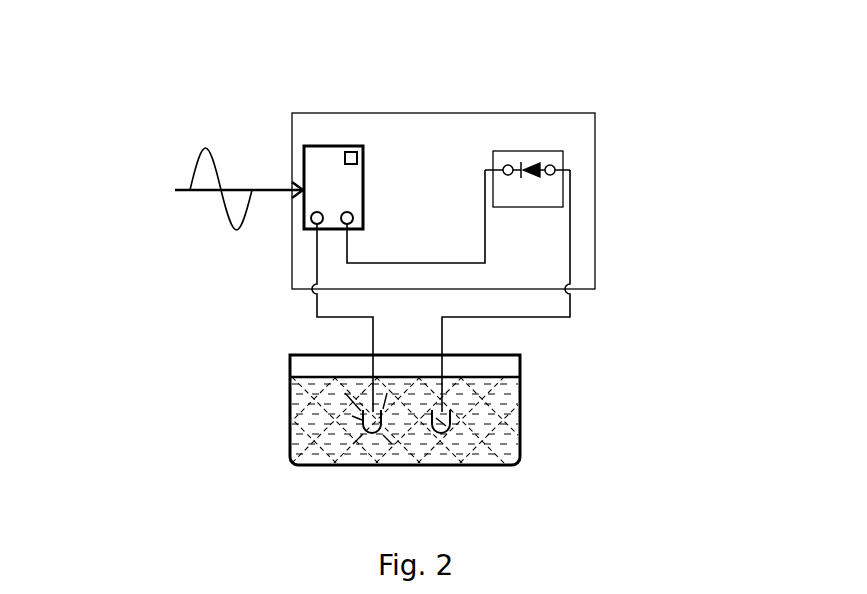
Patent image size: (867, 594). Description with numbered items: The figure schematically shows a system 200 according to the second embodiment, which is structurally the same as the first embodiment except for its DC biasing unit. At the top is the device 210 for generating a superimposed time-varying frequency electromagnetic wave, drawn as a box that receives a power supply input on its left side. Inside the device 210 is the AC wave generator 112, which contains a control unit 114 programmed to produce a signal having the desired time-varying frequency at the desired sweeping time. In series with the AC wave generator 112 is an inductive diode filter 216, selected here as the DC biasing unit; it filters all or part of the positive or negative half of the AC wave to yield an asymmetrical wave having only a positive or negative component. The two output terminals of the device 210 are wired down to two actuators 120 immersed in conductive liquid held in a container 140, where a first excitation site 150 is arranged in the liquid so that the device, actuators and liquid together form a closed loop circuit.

The system 200 is at (622, 347).
The device for generating a superimposed time-varying frequency electromagnetic wave 210 is at (596, 175).
The AC wave generator 112 is at (333, 163).
The control unit 114 is at (350, 157).
The inductive diode filter 216 is at (528, 150).
The container 140 is at (289, 410).
The actuators 120 is at (297, 453).
The first excitation site 150 is at (368, 438).